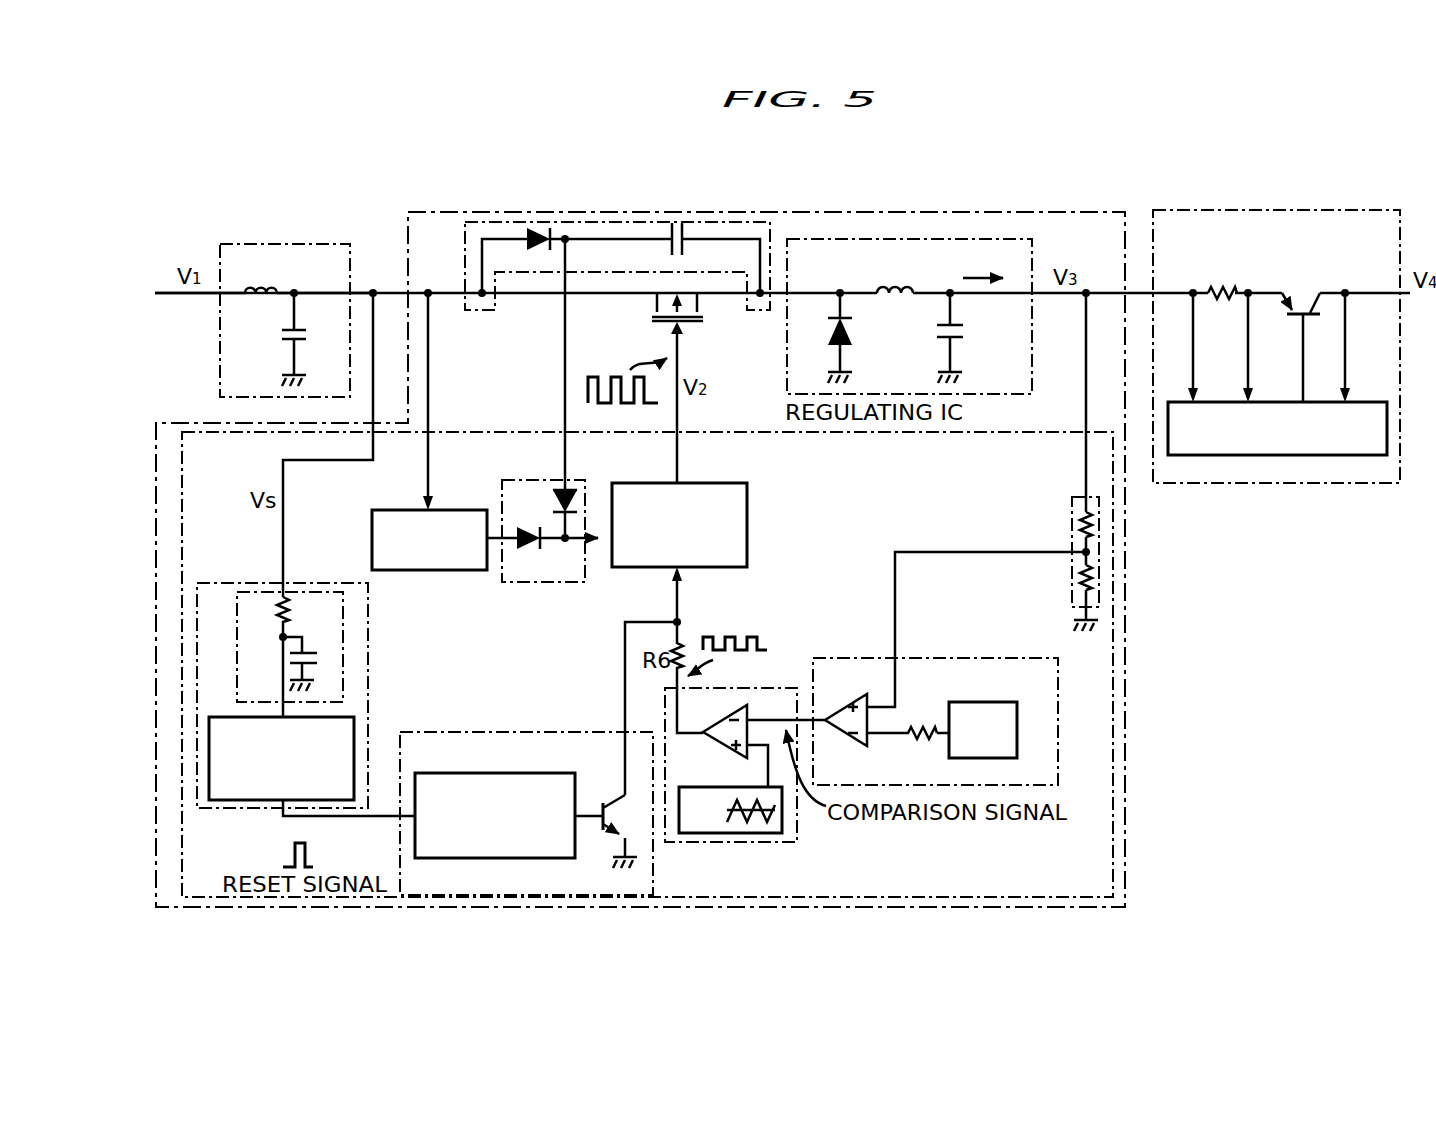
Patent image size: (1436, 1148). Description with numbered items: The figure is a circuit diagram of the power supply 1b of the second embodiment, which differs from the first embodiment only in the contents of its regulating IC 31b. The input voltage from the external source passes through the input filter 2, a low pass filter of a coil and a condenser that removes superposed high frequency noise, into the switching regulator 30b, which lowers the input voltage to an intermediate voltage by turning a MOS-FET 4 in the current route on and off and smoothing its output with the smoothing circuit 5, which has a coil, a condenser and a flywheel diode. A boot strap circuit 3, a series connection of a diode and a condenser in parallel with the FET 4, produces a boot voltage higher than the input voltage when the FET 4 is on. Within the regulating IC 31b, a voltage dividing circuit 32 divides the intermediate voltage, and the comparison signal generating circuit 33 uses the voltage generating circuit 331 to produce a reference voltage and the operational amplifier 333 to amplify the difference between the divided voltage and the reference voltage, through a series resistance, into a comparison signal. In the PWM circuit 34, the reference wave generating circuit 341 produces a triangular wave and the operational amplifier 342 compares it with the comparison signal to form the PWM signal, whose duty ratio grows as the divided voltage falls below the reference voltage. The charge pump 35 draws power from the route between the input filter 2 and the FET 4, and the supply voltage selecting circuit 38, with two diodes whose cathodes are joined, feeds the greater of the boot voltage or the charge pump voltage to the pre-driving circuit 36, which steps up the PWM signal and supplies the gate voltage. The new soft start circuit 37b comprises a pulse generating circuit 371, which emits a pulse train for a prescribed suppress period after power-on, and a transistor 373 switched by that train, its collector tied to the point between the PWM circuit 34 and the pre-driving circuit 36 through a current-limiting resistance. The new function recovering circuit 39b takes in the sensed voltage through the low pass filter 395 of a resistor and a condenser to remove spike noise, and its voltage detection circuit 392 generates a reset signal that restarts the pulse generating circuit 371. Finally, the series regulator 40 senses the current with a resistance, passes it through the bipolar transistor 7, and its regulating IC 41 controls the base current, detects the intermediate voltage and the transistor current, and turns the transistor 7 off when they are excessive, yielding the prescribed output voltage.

The power supply 1b is at (333, 209).
The input filter 2 is at (265, 244).
The boot strap circuit 3 is at (772, 235).
The MOS-FET 4 is at (710, 328).
The smoothing circuit 5 is at (972, 236).
The bipolar transistor 7 is at (1308, 284).
The switching regulator 30b is at (840, 212).
The regulating IC 31b is at (716, 431).
The voltage dividing circuit 32 is at (1070, 520).
The comparison signal generating circuit 33 is at (935, 697).
The pulse width modulation (PWM) signal circuit 34 is at (745, 769).
The charge pump 35 is at (460, 510).
The pre-driving circuit 36 is at (703, 483).
The soft start circuit 37b is at (526, 791).
The supply voltage selecting circuit 38 is at (573, 480).
The function recovering circuit 39b is at (321, 720).
The series regulator 40 is at (1276, 320).
The regulating IC 41 is at (1362, 402).
The voltage generating circuit 331 is at (988, 702).
The operational amplifier 333 is at (850, 698).
The reference wave generating circuit 341 is at (717, 833).
The operational amplifier 342 is at (720, 745).
The pulse generating circuit 371 is at (473, 773).
The transistor 373 is at (605, 800).
The voltage detection circuit 392 is at (240, 800).
The low pass filter 395 is at (345, 652).